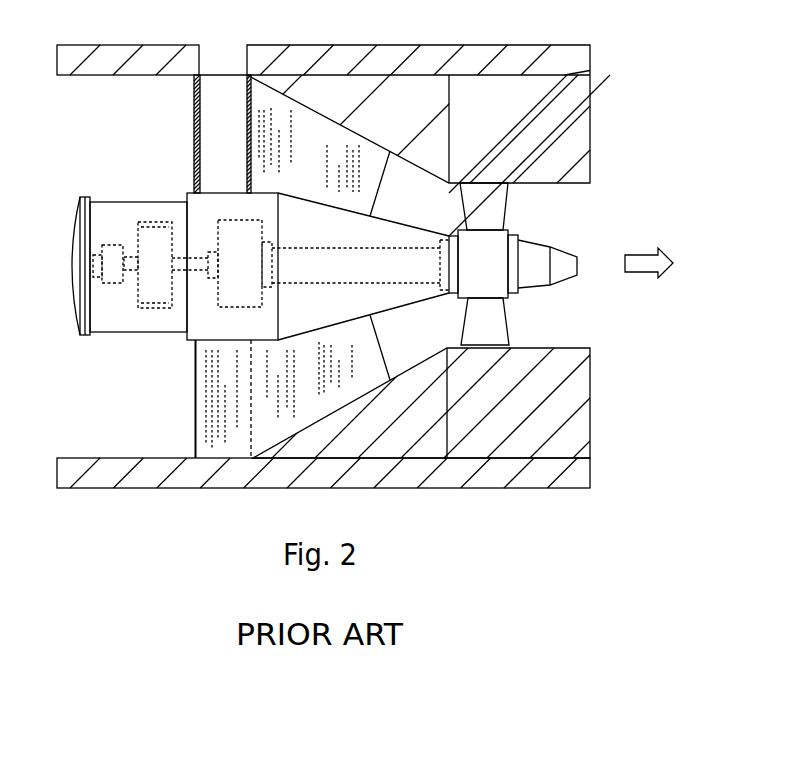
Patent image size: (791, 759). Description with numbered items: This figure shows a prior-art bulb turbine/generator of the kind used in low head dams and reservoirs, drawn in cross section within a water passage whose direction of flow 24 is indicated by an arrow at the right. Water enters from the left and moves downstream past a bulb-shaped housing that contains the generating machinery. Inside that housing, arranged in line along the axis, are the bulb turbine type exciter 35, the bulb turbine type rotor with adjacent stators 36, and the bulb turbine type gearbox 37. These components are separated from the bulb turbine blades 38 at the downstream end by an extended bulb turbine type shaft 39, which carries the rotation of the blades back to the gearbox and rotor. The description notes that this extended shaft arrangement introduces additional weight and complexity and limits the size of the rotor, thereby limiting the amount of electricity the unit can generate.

The direction of flow 24 is at (647, 280).
The bulb turbine type exciter 35 is at (121, 285).
The bulb turbine type rotor with adjacent stators 36 is at (166, 280).
The bulb turbine type gearbox 37 is at (251, 280).
The bulb turbine blades 38 is at (495, 218).
The bulb turbine type shaft 39 is at (369, 278).